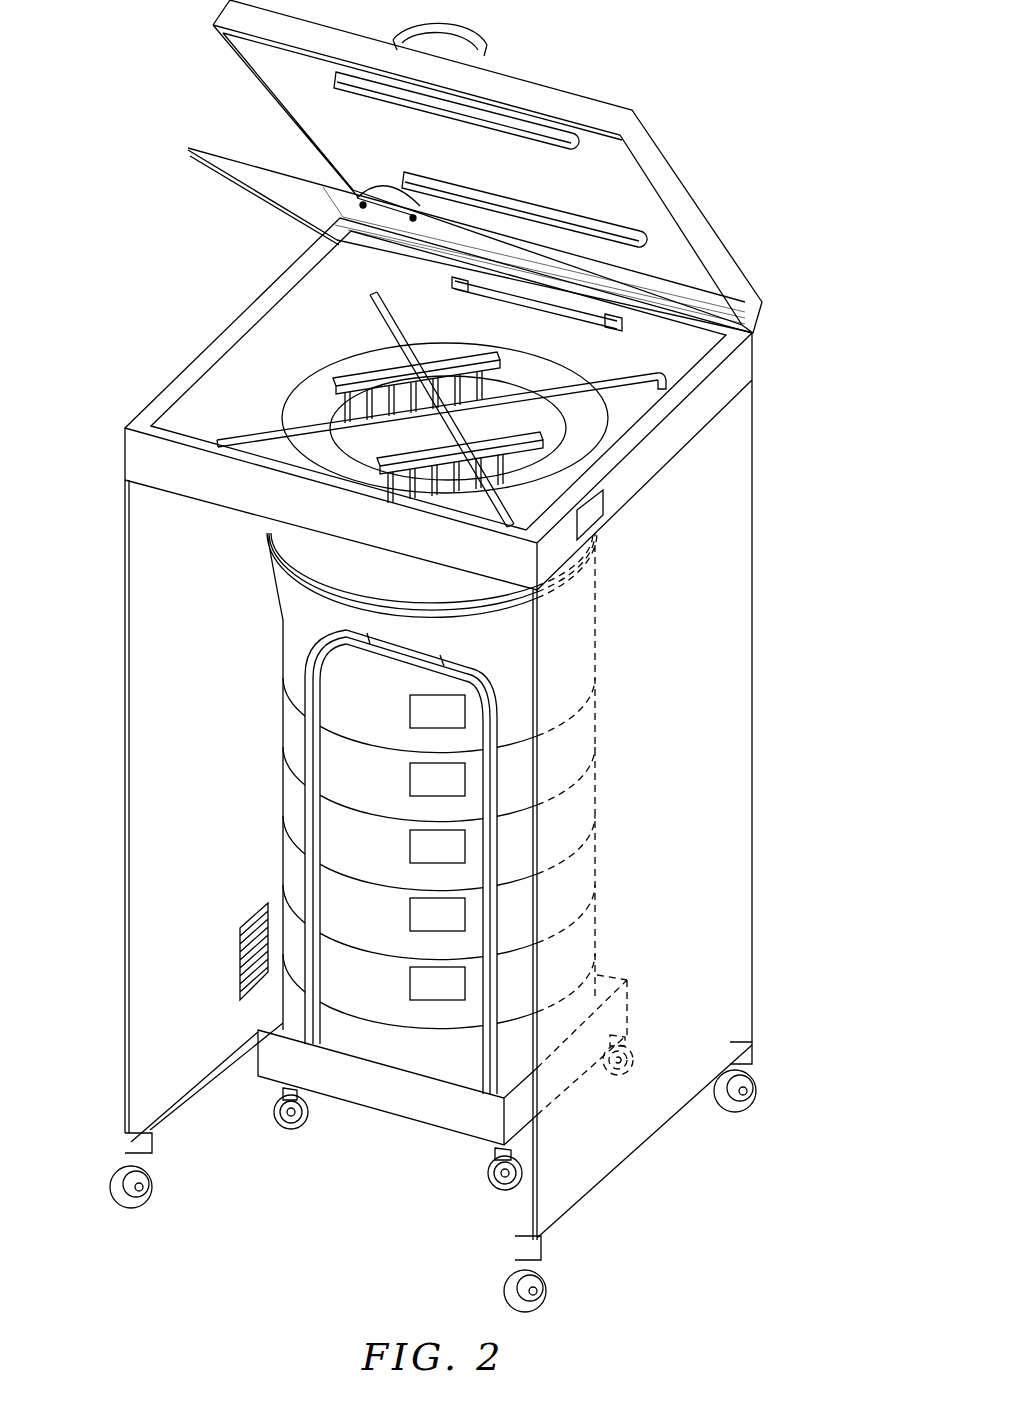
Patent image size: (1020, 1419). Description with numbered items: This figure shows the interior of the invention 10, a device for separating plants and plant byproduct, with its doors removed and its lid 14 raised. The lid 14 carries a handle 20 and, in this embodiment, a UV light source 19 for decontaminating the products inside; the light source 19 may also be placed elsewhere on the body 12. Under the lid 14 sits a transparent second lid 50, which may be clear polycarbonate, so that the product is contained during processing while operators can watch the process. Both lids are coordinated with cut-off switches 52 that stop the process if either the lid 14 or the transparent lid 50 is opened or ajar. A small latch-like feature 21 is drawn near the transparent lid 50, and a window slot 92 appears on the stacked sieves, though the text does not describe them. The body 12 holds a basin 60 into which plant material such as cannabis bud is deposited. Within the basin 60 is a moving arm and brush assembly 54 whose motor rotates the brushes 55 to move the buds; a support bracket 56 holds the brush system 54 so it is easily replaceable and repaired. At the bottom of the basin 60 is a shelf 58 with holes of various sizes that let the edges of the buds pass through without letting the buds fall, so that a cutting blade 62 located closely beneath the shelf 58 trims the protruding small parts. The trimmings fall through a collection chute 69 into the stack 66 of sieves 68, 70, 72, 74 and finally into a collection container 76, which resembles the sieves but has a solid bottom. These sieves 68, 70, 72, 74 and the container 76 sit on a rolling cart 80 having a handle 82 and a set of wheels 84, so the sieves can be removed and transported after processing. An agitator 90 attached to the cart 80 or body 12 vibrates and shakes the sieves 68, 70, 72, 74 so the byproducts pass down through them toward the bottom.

The invention 10 is at (436, 656).
The body 12 is at (433, 765).
The lid 14 is at (487, 166).
The UV light source 19 is at (527, 303).
The handle 20 is at (462, 42).
The latch 21 is at (392, 190).
The transparent second lid 50 is at (282, 197).
The cut-off switches 52 is at (604, 512).
The moving arm and brush assembly 54 is at (348, 390).
The brushes 55 is at (378, 477).
The support bracket 56 is at (220, 405).
The shelf 58 is at (330, 545).
The basin 60 is at (337, 452).
The cutting blade 62 is at (588, 600).
The container stack 66 is at (406, 785).
The top sieve 68 is at (350, 722).
The collection chute 69 is at (325, 628).
The sieve 70 is at (350, 787).
The sieve 72 is at (355, 859).
The sieve 74 is at (357, 931).
The collection container 76 is at (342, 992).
The rolling cart 80 is at (445, 1087).
The handle 82 is at (364, 861).
The wheels 84 is at (293, 1118).
The agitator 90 is at (252, 986).
The window slot 92 is at (446, 848).